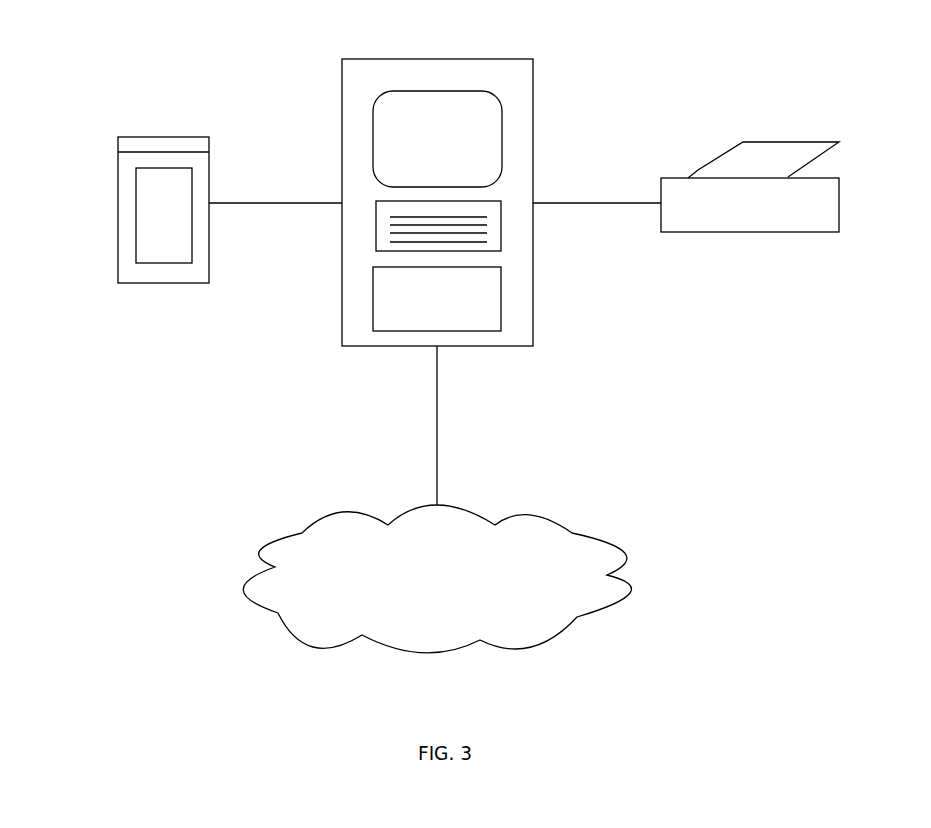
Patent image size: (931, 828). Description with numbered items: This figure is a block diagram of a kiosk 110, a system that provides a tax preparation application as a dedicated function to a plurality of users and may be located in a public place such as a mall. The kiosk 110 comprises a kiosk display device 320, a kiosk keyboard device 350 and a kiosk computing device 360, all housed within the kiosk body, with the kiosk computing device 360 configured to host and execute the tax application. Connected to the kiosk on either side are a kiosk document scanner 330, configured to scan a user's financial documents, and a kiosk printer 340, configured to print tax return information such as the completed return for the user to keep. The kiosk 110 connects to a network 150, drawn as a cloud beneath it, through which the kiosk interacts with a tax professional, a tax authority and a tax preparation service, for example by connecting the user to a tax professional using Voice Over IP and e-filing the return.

The kiosk 110 is at (500, 57).
The kiosk display device 320 is at (388, 88).
The kiosk document scanner 330 is at (176, 130).
The kiosk printer 340 is at (756, 135).
The kiosk keyboard device 350 is at (504, 235).
The kiosk computing device 360 is at (504, 316).
The network 150 is at (437, 579).